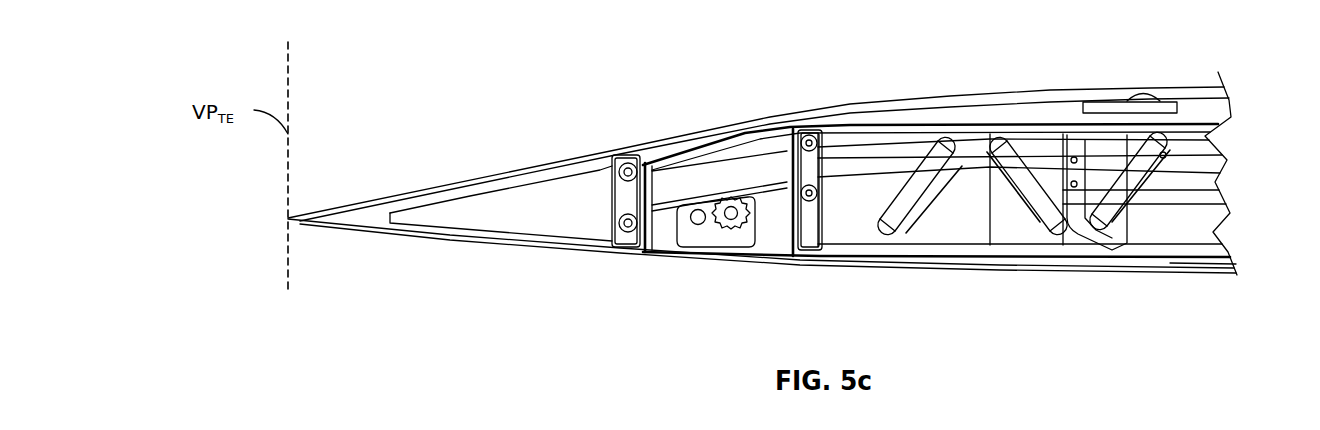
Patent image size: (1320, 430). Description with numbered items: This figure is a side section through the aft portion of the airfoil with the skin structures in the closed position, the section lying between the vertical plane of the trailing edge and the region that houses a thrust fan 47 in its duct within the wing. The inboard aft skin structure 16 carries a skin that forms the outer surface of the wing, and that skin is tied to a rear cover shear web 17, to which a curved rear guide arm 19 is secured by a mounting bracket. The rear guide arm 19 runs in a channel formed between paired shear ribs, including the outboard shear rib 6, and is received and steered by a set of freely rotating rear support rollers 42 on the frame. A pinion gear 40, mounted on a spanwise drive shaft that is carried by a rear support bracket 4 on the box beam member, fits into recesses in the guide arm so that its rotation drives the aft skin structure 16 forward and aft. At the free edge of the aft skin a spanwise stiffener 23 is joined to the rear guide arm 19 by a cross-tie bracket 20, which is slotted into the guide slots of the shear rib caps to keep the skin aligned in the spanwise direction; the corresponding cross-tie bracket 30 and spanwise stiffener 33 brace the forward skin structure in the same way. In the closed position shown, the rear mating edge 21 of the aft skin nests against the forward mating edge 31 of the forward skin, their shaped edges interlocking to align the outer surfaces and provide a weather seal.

The rear support bracket 4 is at (692, 222).
The outboard shear rib 6 is at (943, 207).
The inboard aft skin structure 16 is at (440, 197).
The rear cover shear web 17 is at (613, 232).
The rear guide arm 19 is at (720, 178).
The cross-tie bracket 20 is at (1176, 113).
The rear mating edge 21 is at (1127, 262).
The free-edge spanwise stiffener 23 is at (1105, 92).
The cross-tie bracket 30 is at (1083, 113).
The forward mating edge 31 is at (1137, 263).
The free-edge spanwise stiffener 33 is at (1144, 98).
The pinion gear 40 is at (744, 228).
The rear support roller 42 is at (631, 162).
The thrust fan 47 is at (1048, 120).